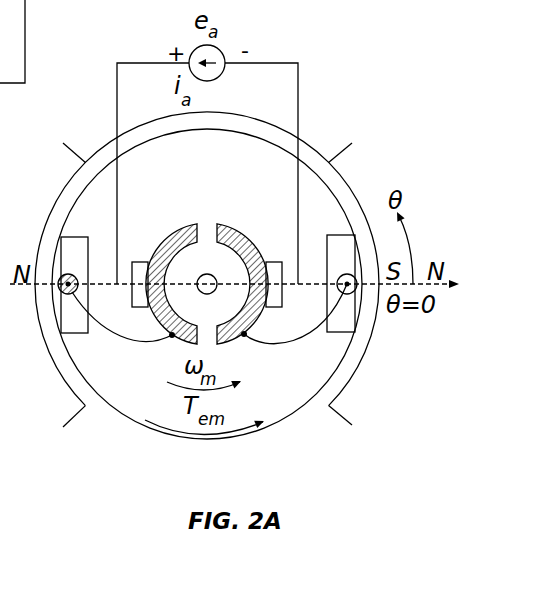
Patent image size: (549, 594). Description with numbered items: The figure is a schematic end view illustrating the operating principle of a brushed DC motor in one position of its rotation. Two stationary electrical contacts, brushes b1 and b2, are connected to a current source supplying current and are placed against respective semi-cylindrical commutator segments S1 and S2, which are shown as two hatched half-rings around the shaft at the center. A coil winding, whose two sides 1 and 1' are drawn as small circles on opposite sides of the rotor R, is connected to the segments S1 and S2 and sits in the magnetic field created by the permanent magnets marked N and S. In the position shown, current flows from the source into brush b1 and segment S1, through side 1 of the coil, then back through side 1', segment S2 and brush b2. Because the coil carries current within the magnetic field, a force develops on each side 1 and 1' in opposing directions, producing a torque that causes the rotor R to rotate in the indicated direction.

The side of the coil 1 is at (73, 285).
The side of the coil 1' is at (342, 283).
The commutator segment S1 is at (171, 263).
The commutator segment S2 is at (242, 263).
The brush b1 is at (147, 307).
The brush b2 is at (282, 307).
The rotor R is at (302, 163).